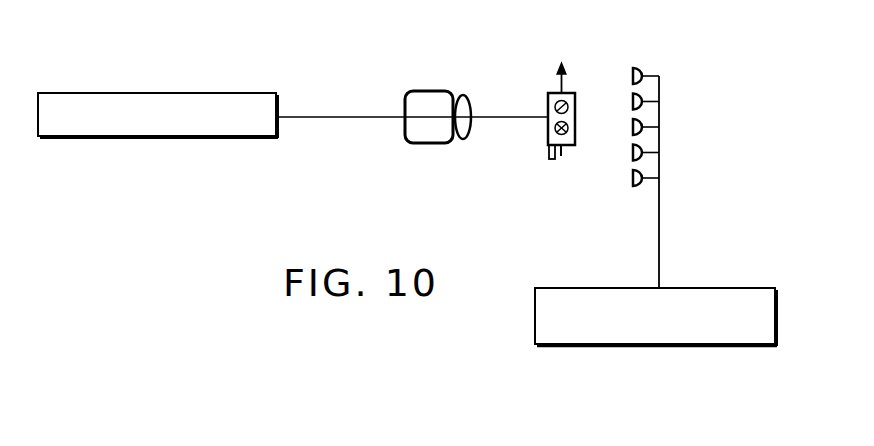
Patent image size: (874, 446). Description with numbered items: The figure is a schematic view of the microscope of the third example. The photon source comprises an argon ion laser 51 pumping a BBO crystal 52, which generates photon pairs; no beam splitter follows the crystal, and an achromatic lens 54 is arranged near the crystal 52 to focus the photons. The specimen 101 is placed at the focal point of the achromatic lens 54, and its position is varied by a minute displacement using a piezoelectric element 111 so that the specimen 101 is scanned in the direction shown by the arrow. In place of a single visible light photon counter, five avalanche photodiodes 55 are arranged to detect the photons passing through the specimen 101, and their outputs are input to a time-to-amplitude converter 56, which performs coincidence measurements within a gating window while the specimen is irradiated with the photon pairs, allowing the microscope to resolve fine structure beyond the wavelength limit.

The argon ion laser 51 is at (137, 92).
The BBO crystal 52 is at (423, 90).
The achromatic lens 54 is at (462, 139).
The specimen 101 is at (572, 145).
The piezoelectric element 111 is at (550, 159).
The avalanche photodiodes 55 is at (638, 66).
The time-to-amplitude converter 56 is at (745, 288).